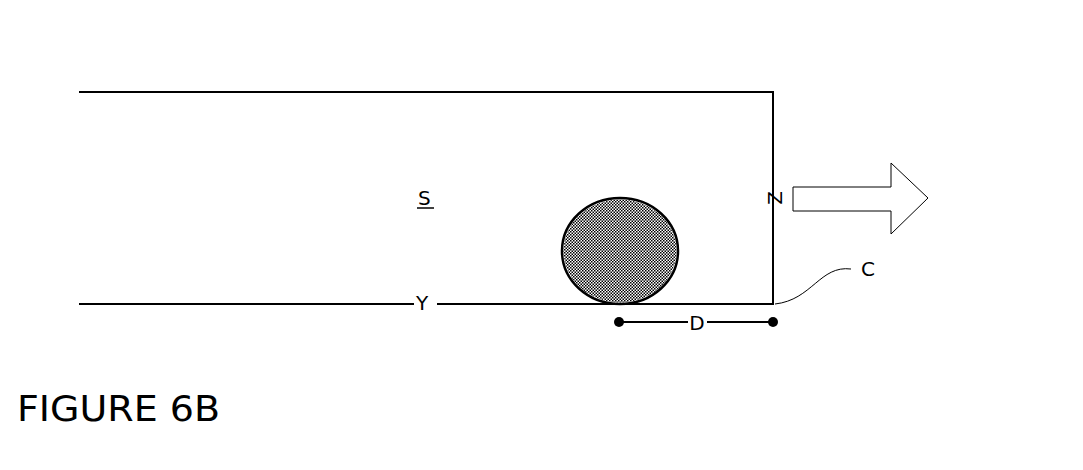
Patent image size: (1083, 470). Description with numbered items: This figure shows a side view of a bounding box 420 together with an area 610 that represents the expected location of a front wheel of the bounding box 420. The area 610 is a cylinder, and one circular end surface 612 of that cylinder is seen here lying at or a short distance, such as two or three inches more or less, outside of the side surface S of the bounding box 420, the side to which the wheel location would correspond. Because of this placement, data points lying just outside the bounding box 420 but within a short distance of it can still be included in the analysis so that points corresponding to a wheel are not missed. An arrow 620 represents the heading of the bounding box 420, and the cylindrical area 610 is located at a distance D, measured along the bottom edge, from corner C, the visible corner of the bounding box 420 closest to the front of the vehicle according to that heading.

The bounding box 420 is at (327, 92).
The area 610 is at (618, 197).
The circular end surface 612 is at (620, 251).
The arrow 620 is at (801, 187).